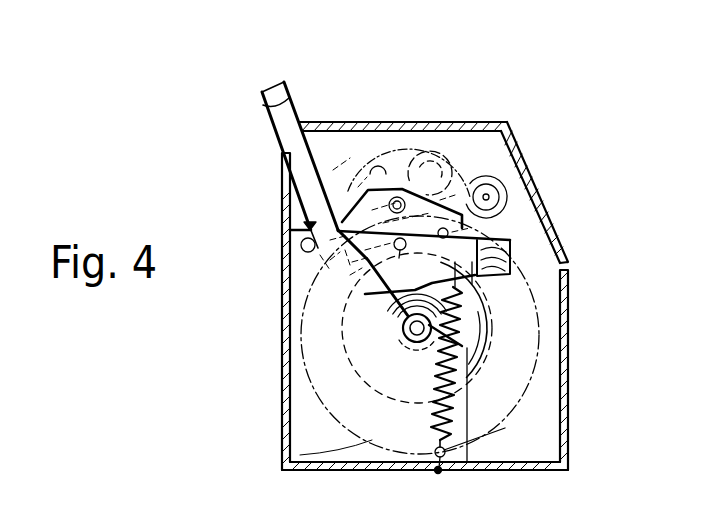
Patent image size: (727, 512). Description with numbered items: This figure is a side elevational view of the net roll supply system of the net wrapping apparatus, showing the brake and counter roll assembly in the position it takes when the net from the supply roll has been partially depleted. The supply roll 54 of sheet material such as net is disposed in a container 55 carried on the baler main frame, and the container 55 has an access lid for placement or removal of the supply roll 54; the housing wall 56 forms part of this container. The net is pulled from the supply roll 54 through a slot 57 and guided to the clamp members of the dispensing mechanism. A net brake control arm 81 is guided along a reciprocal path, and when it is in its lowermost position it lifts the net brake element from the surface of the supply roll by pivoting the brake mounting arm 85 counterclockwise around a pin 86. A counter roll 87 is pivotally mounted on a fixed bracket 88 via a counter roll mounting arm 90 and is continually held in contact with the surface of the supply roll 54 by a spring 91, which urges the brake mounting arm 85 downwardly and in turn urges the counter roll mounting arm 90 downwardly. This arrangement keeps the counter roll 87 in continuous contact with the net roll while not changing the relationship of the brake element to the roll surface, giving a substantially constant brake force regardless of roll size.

The supply roll 54 is at (490, 357).
The container 55 is at (568, 308).
The inclined wall 56 is at (516, 139).
The slot 57 is at (282, 178).
The net brake control arm 81 is at (280, 120).
The brake mounting arm 85 is at (404, 332).
The pin 86 is at (318, 320).
The counter roll 87 is at (465, 228).
The fixed bracket 88 is at (318, 440).
The counter roll mounting arm 90 is at (366, 192).
The spring 91 is at (448, 408).